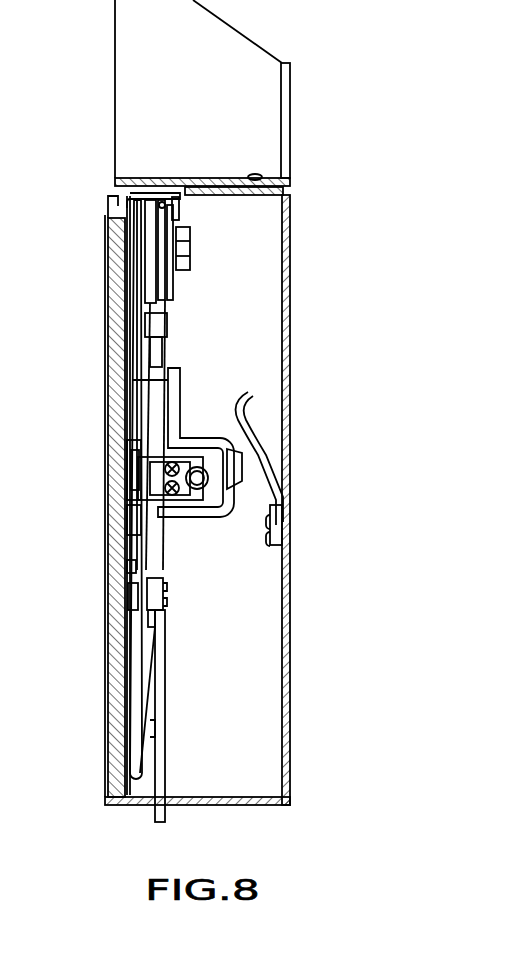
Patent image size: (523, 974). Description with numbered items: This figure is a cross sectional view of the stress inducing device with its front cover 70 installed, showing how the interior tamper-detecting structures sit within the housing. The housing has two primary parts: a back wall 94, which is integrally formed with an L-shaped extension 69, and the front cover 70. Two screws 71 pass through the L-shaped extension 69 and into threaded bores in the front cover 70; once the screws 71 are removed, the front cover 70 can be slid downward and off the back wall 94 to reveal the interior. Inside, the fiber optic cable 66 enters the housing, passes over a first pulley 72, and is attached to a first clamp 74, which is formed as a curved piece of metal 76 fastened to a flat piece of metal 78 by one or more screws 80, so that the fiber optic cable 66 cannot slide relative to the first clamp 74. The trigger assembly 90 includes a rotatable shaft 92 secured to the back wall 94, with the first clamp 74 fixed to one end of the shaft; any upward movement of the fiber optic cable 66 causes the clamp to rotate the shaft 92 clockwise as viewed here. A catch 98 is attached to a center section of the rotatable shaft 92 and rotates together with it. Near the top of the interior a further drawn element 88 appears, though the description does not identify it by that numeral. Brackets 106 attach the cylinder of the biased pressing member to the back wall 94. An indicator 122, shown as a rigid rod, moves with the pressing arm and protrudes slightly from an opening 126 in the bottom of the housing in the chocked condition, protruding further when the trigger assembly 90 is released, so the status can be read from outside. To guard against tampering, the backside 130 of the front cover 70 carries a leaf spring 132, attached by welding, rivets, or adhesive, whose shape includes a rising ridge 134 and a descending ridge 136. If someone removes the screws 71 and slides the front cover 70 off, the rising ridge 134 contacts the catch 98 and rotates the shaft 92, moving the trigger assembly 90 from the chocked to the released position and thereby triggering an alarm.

The fiber optic cable 66 is at (140, 345).
The L-shaped extension 69 is at (183, 178).
The front cover 70 is at (290, 262).
The screws 71 is at (257, 174).
The first pulley 72 is at (114, 187).
The first clamp 74 is at (128, 469).
The curved piece of metal 76 is at (147, 502).
The flat piece of metal 78 is at (190, 505).
The screws 80 is at (168, 458).
The nut 88 is at (173, 225).
The trigger assembly 90 is at (215, 527).
The rotatable shaft 92 is at (196, 467).
The back wall 94 is at (105, 673).
The catch 98 is at (245, 465).
The brackets 106 is at (165, 325).
The indicator 122 is at (166, 763).
The opening 126 is at (153, 808).
The backside 130 is at (290, 361).
The leaf spring 132 is at (270, 490).
The rising ridge 134 is at (172, 378).
The descending ridge 136 is at (262, 405).